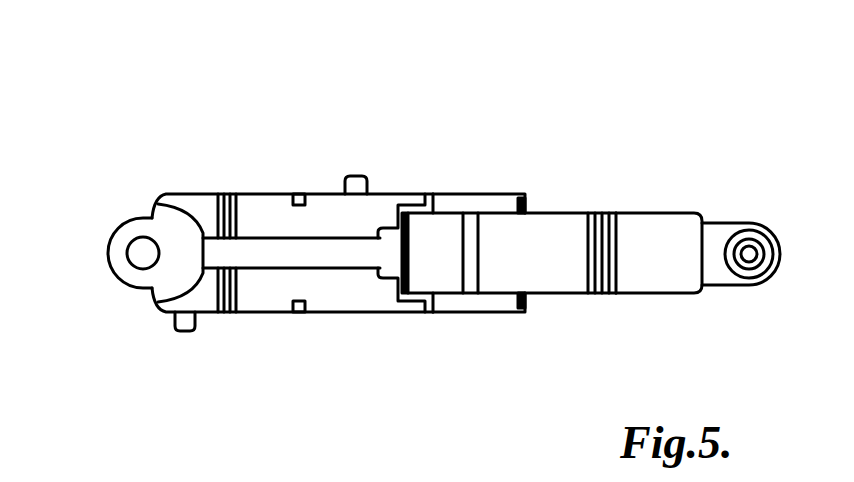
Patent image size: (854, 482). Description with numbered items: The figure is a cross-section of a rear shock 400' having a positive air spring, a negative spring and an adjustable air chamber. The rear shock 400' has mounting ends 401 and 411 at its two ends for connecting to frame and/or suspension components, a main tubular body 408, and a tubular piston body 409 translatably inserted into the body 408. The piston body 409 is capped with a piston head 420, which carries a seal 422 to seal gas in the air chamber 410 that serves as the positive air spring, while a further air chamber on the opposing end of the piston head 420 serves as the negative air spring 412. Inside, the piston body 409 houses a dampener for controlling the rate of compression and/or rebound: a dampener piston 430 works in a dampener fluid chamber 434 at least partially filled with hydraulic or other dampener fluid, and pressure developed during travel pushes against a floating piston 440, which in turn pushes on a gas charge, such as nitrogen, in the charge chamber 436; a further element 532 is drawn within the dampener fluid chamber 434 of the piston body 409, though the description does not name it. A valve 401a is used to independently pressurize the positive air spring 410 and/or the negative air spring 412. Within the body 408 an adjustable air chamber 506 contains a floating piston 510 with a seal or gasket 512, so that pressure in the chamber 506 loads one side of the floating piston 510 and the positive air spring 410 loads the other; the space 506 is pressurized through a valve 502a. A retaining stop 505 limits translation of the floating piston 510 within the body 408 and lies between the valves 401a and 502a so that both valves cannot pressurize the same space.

The rear shock 400' is at (414, 230).
The mounting end 401 is at (120, 257).
The valve 401a is at (352, 177).
The main tubular body 408 is at (333, 313).
The tubular piston body 409 is at (565, 212).
The air chamber 410 is at (248, 295).
The mounting end 411 is at (743, 280).
The negative air spring 412 is at (497, 305).
The piston head 420 is at (392, 300).
The seal 422 is at (430, 190).
The dampener piston 430 is at (240, 253).
The dampener fluid chamber 434 is at (565, 278).
The charge chamber 436 is at (673, 283).
The floating piston 440 is at (617, 208).
The valve 502a is at (183, 333).
The retaining stop 505 is at (298, 193).
The adjustable air chamber 506 is at (138, 218).
The floating piston 510 is at (201, 210).
The seal or gasket 512 is at (219, 193).
The floating piston 532 is at (474, 258).